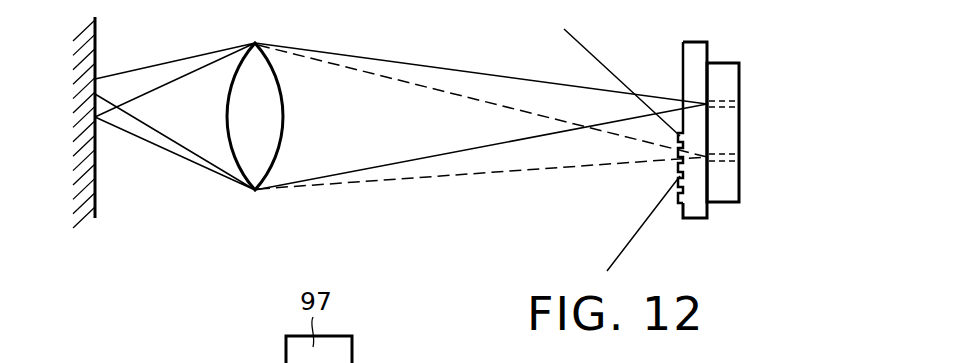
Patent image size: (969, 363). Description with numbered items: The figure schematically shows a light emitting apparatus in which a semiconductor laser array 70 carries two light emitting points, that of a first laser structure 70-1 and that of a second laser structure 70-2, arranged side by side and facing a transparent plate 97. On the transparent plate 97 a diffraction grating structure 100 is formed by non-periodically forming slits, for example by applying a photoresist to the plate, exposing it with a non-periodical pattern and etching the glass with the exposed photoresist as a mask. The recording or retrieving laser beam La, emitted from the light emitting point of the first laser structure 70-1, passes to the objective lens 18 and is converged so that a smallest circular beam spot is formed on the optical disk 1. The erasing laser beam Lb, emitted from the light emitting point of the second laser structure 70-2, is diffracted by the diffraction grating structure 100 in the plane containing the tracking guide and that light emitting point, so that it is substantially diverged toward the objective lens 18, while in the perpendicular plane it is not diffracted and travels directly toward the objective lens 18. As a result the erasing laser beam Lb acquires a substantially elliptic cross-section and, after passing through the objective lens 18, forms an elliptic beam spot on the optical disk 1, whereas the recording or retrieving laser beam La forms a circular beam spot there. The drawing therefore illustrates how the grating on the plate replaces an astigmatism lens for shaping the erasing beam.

The optical disk 1 is at (97, 208).
The objective lens 18 is at (262, 73).
The recording or retrieving laser beam La is at (393, 61).
The erasing laser beam Lb is at (410, 180).
The transparent plate 97 is at (692, 47).
The diffraction grating structure 100 is at (677, 174).
The semiconductor laser array 70 is at (722, 73).
The first laser structure 70-1 is at (741, 118).
The second laser structure 70-2 is at (741, 172).